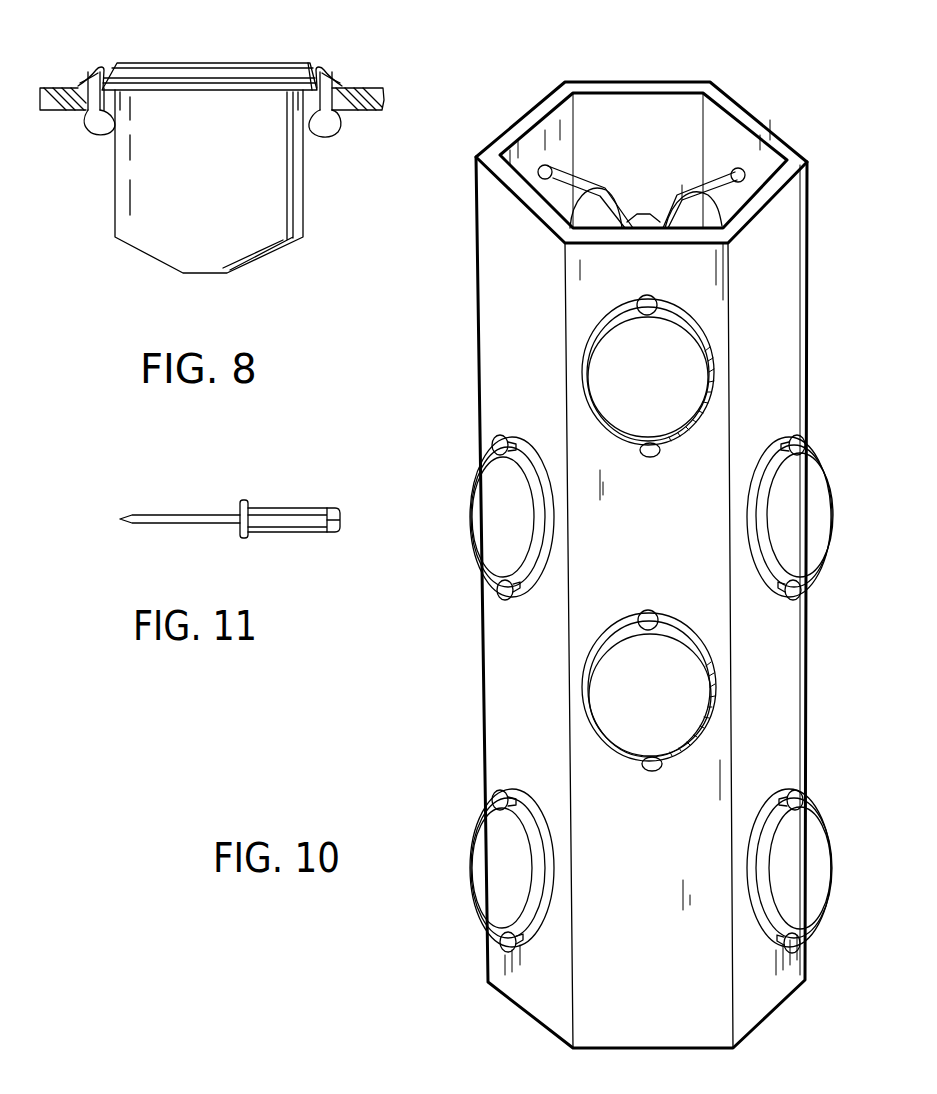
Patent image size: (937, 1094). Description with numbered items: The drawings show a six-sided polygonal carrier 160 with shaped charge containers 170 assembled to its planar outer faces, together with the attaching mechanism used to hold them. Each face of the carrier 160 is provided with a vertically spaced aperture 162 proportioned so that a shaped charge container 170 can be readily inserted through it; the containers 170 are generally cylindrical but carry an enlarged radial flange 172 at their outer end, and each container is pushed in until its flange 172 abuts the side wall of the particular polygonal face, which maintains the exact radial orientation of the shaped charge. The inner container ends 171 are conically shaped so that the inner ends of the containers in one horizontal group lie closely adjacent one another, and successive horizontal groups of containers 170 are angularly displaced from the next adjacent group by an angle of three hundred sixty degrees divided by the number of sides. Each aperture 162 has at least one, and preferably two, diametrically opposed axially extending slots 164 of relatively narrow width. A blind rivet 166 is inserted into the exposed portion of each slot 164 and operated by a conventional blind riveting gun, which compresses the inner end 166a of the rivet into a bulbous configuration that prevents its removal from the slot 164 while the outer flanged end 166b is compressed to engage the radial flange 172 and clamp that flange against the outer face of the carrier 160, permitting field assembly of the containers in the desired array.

In FIG. 10, the polygonal carrier 160 is at (783, 283).
In FIG. 10, the aperture 162 is at (752, 183).
In FIG. 8, the slot 164 is at (312, 98).
In FIG. 8, the blind rivet 166 is at (95, 103).
In FIG. 11, the blind rivet 166 is at (287, 506).
In FIG. 10, the blind rivet 166 is at (650, 612).
In FIG. 8, the inner end of blind rivet 166a is at (92, 137).
In FIG. 8, the outer flanged end of blind rivet 166b is at (340, 82).
In FIG. 11, the outer flanged end of blind rivet 166b is at (248, 537).
In FIG. 8, the shaped charge container 170 is at (305, 192).
In FIG. 10, the shaped charge container 170 is at (698, 187).
In FIG. 10, the inner container end 171 is at (663, 218).
In FIG. 8, the flange 172 is at (172, 82).
In FIG. 10, the flange 172 is at (483, 800).